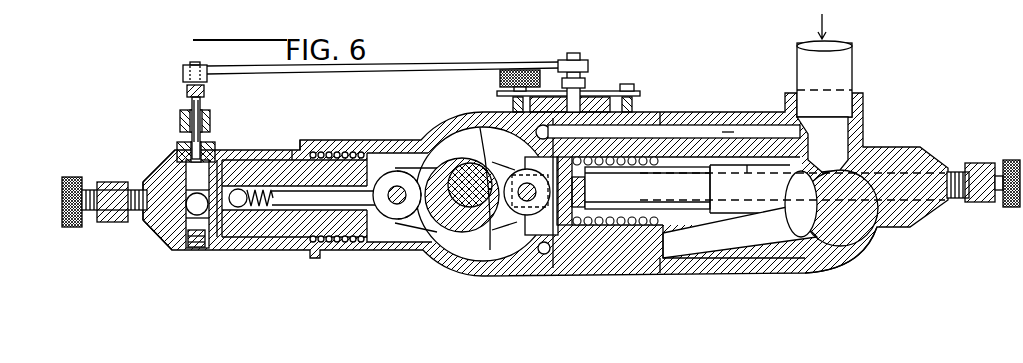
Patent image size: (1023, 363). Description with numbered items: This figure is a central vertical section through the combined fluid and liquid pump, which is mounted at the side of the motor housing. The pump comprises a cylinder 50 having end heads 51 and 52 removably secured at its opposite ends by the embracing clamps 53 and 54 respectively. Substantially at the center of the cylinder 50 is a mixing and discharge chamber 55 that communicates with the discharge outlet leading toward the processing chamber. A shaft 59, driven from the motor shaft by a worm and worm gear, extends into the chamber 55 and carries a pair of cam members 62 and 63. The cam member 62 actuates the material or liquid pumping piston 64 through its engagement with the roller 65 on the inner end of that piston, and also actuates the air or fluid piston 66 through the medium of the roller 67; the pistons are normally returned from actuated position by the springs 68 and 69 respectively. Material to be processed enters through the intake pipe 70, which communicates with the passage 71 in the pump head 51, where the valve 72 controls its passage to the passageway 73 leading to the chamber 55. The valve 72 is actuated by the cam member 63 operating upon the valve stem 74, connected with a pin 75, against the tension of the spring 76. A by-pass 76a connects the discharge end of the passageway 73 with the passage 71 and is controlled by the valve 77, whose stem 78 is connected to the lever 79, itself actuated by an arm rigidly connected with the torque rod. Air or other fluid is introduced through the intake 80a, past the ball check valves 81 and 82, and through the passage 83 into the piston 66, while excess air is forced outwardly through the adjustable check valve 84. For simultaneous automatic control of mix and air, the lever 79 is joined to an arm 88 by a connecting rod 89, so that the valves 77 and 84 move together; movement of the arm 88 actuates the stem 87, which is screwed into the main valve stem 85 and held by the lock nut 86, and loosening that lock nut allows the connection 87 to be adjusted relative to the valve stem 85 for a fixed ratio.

The cylinder 50 is at (563, 268).
The end head 51 is at (805, 264).
The end head 52 is at (256, 244).
The embracing clamp 53 is at (968, 203).
The embracing clamp 54 is at (118, 222).
The mixing and discharge chamber 55 is at (477, 255).
The shaft 59 is at (489, 250).
The cam member 62 is at (443, 167).
The cam member 63 is at (488, 160).
The material or liquid pumping piston 64 is at (683, 165).
The roller 65 is at (521, 218).
The air or fluid piston 66 is at (275, 158).
The roller 67 is at (390, 174).
The spring 68 is at (640, 158).
The spring 69 is at (335, 151).
The intake pipe 70 is at (845, 70).
The passage 71 is at (840, 130).
The valve 72 is at (846, 252).
The passageway 73 is at (692, 248).
The valve stem 74 is at (747, 172).
The pin 75 is at (832, 172).
The spring 76 is at (908, 172).
The by-pass 76a is at (728, 132).
The valve 77 is at (590, 100).
The stem 78 is at (572, 58).
The lever 79 is at (586, 78).
The intake 80a is at (192, 248).
The ball check valve 81 is at (182, 214).
The ball check valve 82 is at (243, 184).
The passage 83 is at (292, 152).
The check valve 84 is at (180, 148).
The main valve stem 85 is at (210, 124).
The lock nut 86 is at (206, 112).
The stem 87 is at (187, 90).
The arm 88 is at (183, 68).
The connecting rod 89 is at (413, 68).